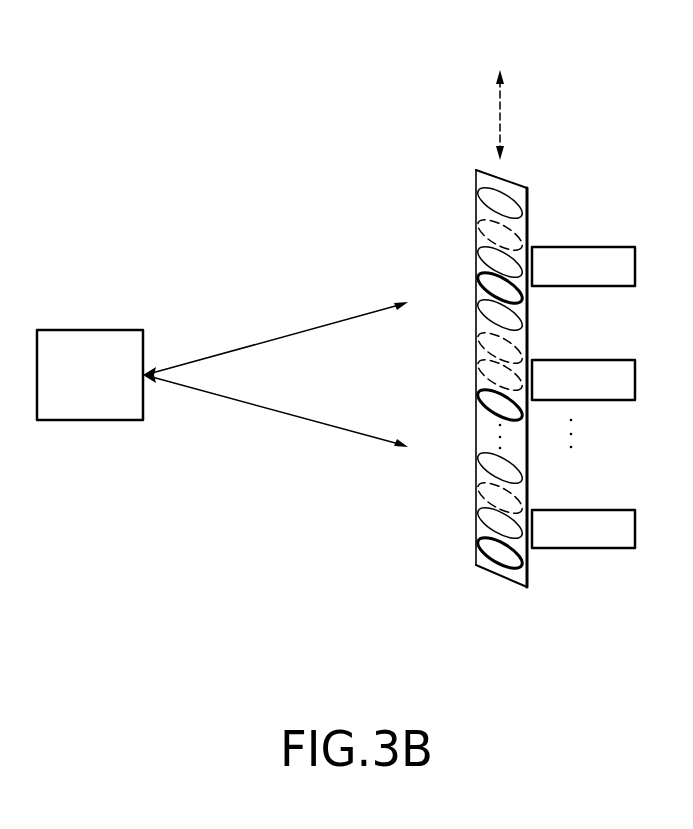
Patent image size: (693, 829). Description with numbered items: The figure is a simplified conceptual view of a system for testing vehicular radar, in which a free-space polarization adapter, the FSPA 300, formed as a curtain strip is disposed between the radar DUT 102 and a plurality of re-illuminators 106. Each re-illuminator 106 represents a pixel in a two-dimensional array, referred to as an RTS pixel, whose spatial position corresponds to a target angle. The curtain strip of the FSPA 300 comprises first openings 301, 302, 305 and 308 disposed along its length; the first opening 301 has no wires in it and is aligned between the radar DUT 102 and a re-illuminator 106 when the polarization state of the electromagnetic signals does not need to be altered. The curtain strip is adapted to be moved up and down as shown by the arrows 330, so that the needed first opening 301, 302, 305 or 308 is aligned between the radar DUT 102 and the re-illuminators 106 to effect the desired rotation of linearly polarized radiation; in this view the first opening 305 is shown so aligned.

The radar device under test 102 is at (84, 330).
The re-illuminator 106 is at (620, 247).
The free-space polarization adapter 300 is at (495, 590).
The first opening 301 is at (527, 197).
The first opening 302 is at (480, 222).
The first opening 305 is at (480, 260).
The first opening 308 is at (527, 304).
The arrows 330 is at (512, 115).